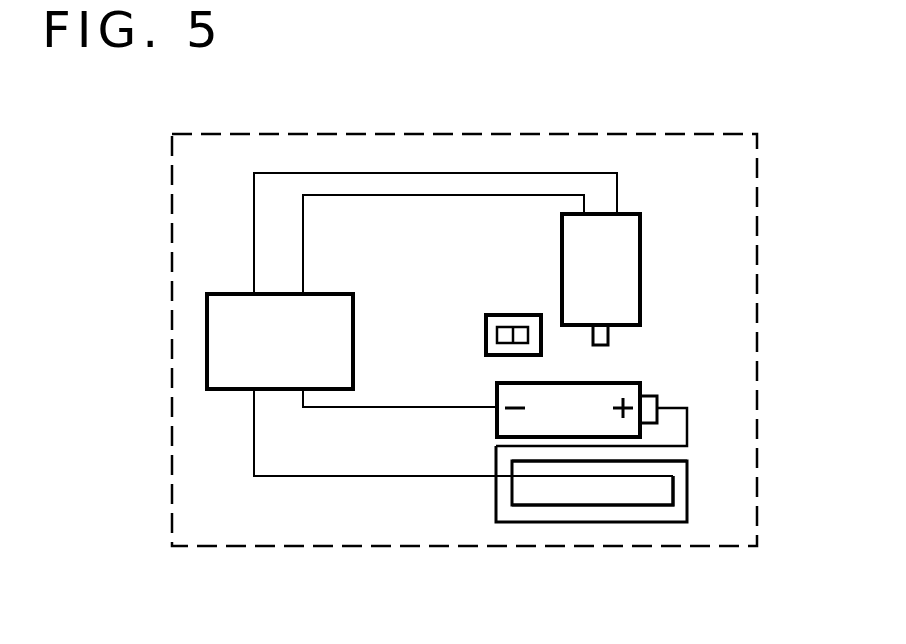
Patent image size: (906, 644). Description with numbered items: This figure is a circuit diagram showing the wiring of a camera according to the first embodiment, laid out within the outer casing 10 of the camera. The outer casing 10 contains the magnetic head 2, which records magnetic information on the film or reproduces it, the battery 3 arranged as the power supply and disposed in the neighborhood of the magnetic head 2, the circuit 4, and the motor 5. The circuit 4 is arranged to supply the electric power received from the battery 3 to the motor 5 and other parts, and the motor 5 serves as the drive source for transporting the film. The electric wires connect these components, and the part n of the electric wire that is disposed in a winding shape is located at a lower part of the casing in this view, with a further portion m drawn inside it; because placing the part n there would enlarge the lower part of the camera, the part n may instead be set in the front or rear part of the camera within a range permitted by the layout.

The magnetic head 2 is at (503, 315).
The battery 3 is at (622, 382).
The circuit 4 is at (353, 333).
The motor 5 is at (640, 248).
The outer casing 10 is at (757, 418).
The part of the electric wire disposed in a winding shape n is at (542, 522).
The magnet core m is at (640, 476).